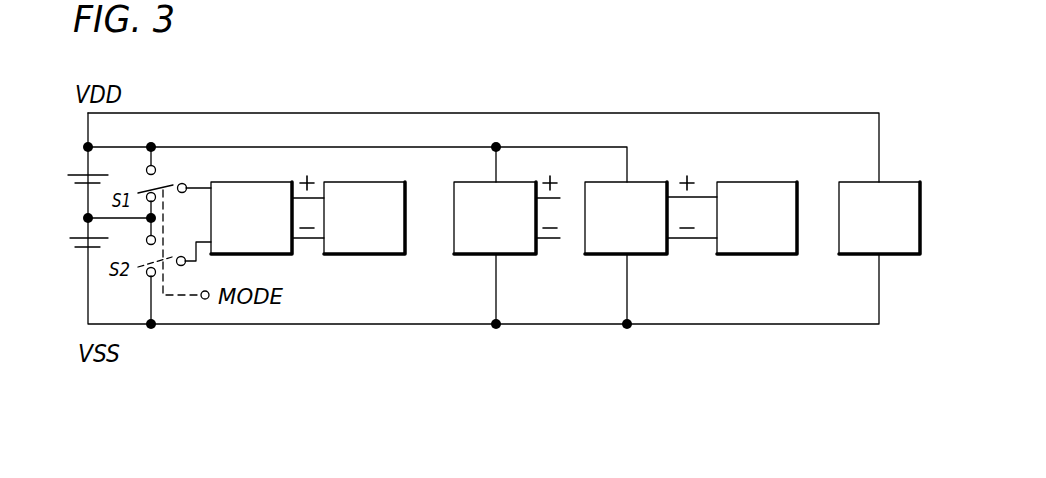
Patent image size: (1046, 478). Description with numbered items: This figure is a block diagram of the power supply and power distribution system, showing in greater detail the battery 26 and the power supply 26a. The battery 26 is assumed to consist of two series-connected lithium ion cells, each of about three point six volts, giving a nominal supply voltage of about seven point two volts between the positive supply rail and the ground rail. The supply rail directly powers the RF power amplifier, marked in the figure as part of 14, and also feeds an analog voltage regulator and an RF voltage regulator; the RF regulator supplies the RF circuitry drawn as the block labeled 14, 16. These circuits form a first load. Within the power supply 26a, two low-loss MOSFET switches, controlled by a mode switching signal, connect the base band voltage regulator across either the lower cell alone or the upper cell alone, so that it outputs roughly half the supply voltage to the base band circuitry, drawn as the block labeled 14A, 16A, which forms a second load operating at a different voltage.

The battery 26 is at (71, 160).
The power supply 26a is at (607, 254).
The baseband (BB) circuitry 14A is at (378, 234).
The baseband (BB) circuitry 16A is at (337, 254).
The RF circuitry / power amplifier (PA) 14 is at (818, 287).
The RF circuitry 16 is at (727, 254).